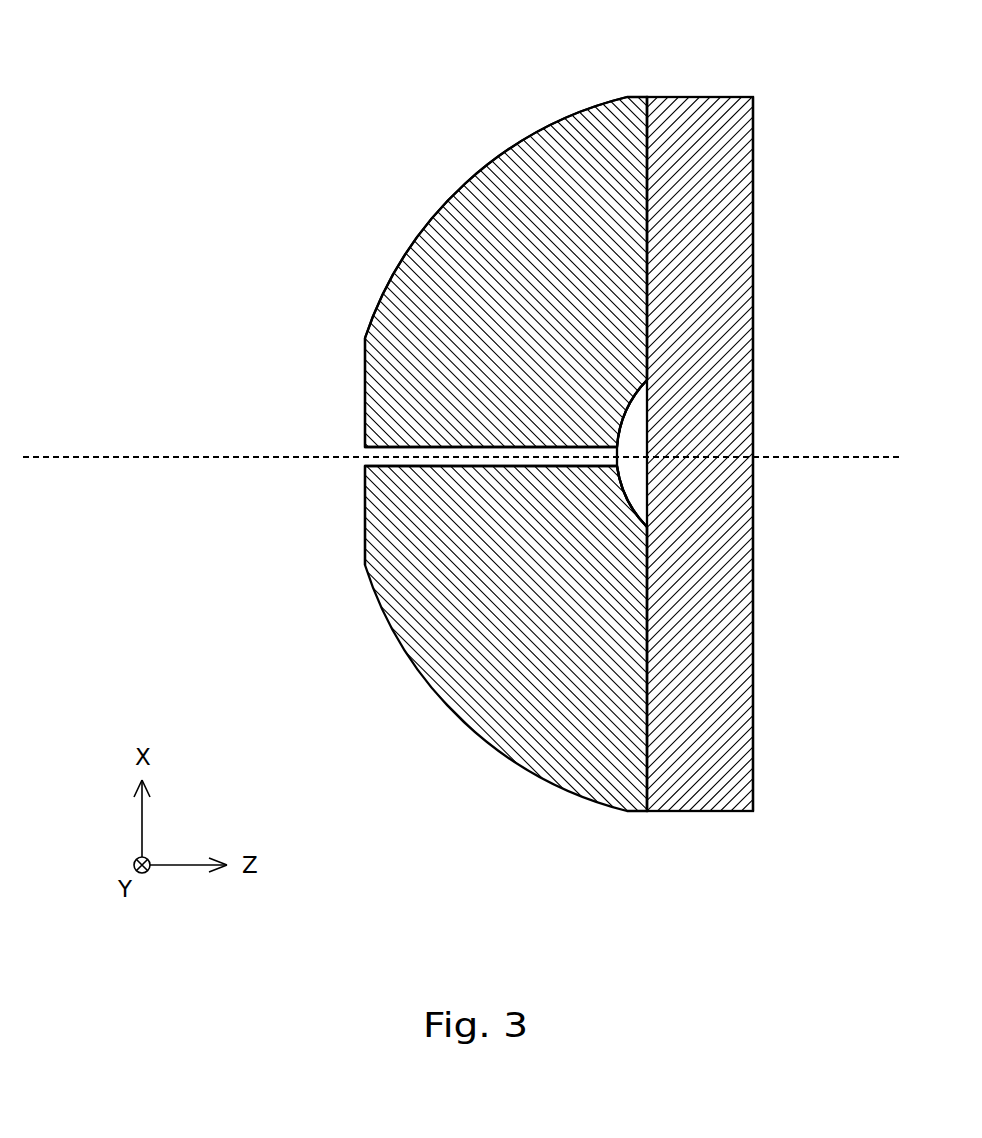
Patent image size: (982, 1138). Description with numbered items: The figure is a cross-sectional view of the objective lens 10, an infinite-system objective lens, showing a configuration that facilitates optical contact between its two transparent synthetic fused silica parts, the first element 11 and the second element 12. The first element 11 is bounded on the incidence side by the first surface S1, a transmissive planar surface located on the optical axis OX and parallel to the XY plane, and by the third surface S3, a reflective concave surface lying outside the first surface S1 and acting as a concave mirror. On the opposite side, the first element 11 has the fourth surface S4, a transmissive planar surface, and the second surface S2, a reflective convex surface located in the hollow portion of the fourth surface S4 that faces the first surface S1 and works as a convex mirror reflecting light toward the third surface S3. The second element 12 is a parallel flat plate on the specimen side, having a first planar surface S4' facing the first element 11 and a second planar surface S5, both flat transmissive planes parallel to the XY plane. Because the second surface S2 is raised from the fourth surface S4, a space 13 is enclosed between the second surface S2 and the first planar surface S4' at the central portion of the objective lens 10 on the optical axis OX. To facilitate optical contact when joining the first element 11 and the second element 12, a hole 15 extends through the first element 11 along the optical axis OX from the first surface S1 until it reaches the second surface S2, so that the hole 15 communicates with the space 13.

The objective lens 10 is at (85, 54).
The first element 11 is at (499, 740).
The second element 12 is at (754, 718).
The space 13 is at (628, 469).
The hole 15 is at (358, 461).
The first surface S1 is at (365, 412).
The second surface S2 is at (622, 424).
The third surface S3 is at (478, 170).
The fourth surface S4 is at (676, 215).
The first planar surface S4' is at (618, 694).
The second planar surface S5 is at (754, 153).
The optical axis OX is at (36, 462).